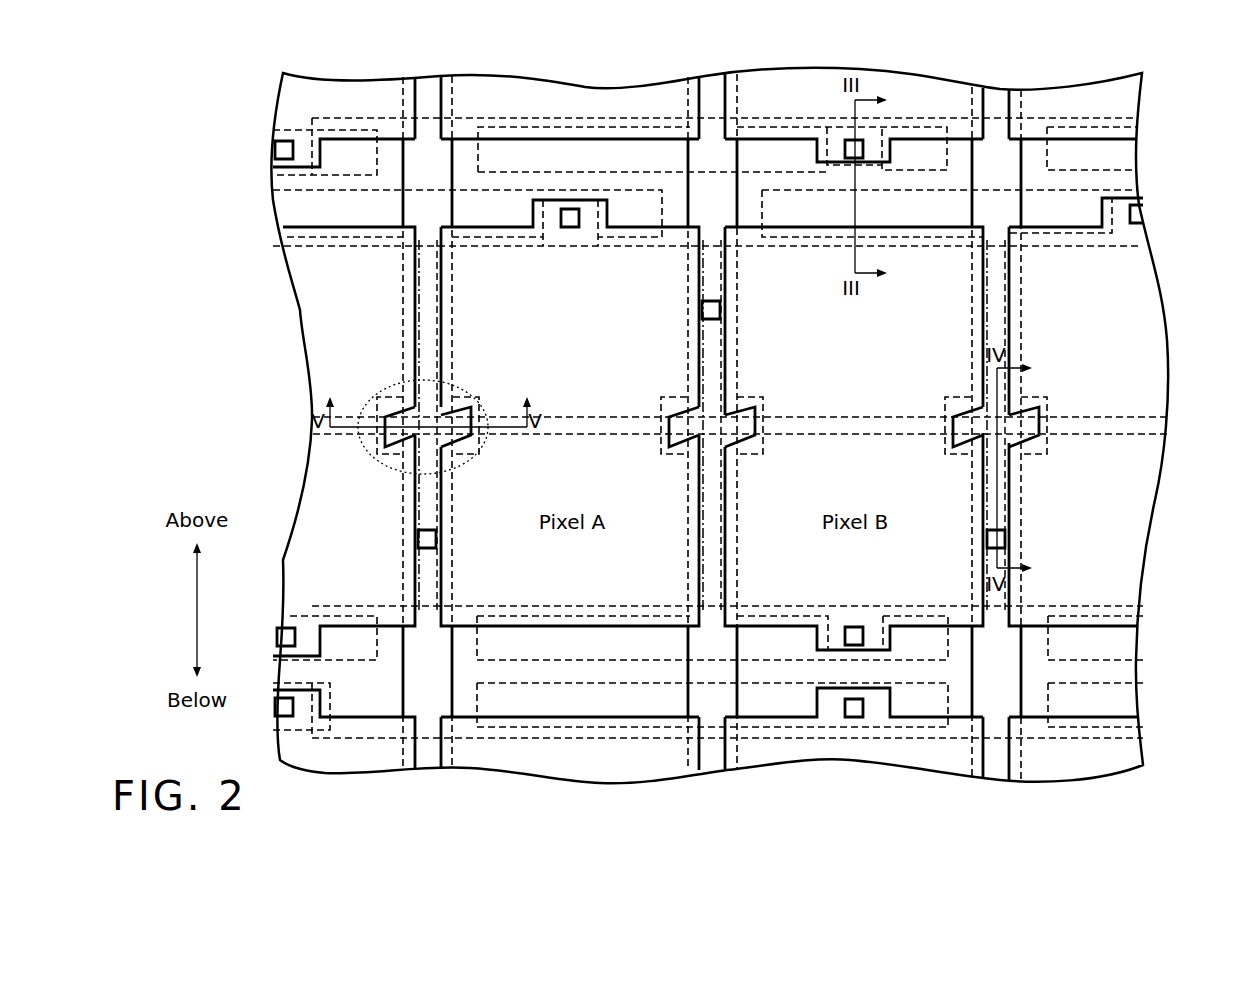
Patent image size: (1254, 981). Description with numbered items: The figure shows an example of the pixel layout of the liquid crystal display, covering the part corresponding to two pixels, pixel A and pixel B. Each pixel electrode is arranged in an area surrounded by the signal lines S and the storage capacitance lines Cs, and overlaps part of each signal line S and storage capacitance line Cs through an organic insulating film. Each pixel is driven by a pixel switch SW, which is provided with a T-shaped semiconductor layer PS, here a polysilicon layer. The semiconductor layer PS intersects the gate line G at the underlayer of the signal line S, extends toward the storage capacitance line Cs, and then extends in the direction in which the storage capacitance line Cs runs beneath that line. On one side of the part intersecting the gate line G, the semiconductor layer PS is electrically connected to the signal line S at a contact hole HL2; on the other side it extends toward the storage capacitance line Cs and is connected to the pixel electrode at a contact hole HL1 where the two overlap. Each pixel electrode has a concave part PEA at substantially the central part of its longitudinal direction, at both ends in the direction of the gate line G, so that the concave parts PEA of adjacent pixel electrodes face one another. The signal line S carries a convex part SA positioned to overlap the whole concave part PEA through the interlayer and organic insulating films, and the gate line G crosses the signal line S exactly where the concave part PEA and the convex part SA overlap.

The signal line S is at (452, 100).
The storage capacitance line Cs is at (1113, 137).
The gate line G is at (1133, 432).
The semiconductor layer PS is at (452, 298).
The contact hole HL1 is at (570, 228).
The contact hole HL2 is at (436, 540).
The concave part PEA is at (398, 410).
The convex part SA is at (390, 450).
The pixel switch SW is at (468, 388).